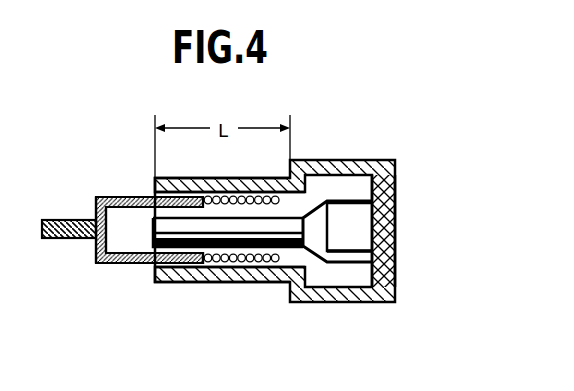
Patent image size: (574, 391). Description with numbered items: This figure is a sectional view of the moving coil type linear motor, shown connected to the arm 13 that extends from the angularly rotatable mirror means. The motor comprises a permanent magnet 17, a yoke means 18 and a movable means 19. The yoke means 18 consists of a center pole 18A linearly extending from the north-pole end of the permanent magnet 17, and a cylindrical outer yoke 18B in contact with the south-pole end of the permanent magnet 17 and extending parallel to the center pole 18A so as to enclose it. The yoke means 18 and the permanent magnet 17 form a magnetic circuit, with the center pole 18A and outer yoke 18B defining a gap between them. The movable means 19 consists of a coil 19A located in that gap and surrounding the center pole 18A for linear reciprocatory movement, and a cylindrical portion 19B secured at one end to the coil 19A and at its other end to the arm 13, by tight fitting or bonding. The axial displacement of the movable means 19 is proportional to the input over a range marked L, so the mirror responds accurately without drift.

The arm 13 is at (70, 218).
The permanent magnet 17 is at (366, 213).
The yoke means 18 is at (345, 303).
The center pole 18A is at (177, 228).
The outer yoke 18B is at (233, 179).
The movable means 19 is at (180, 222).
The coil 19A is at (242, 283).
The cylindrical portion 19B is at (107, 265).